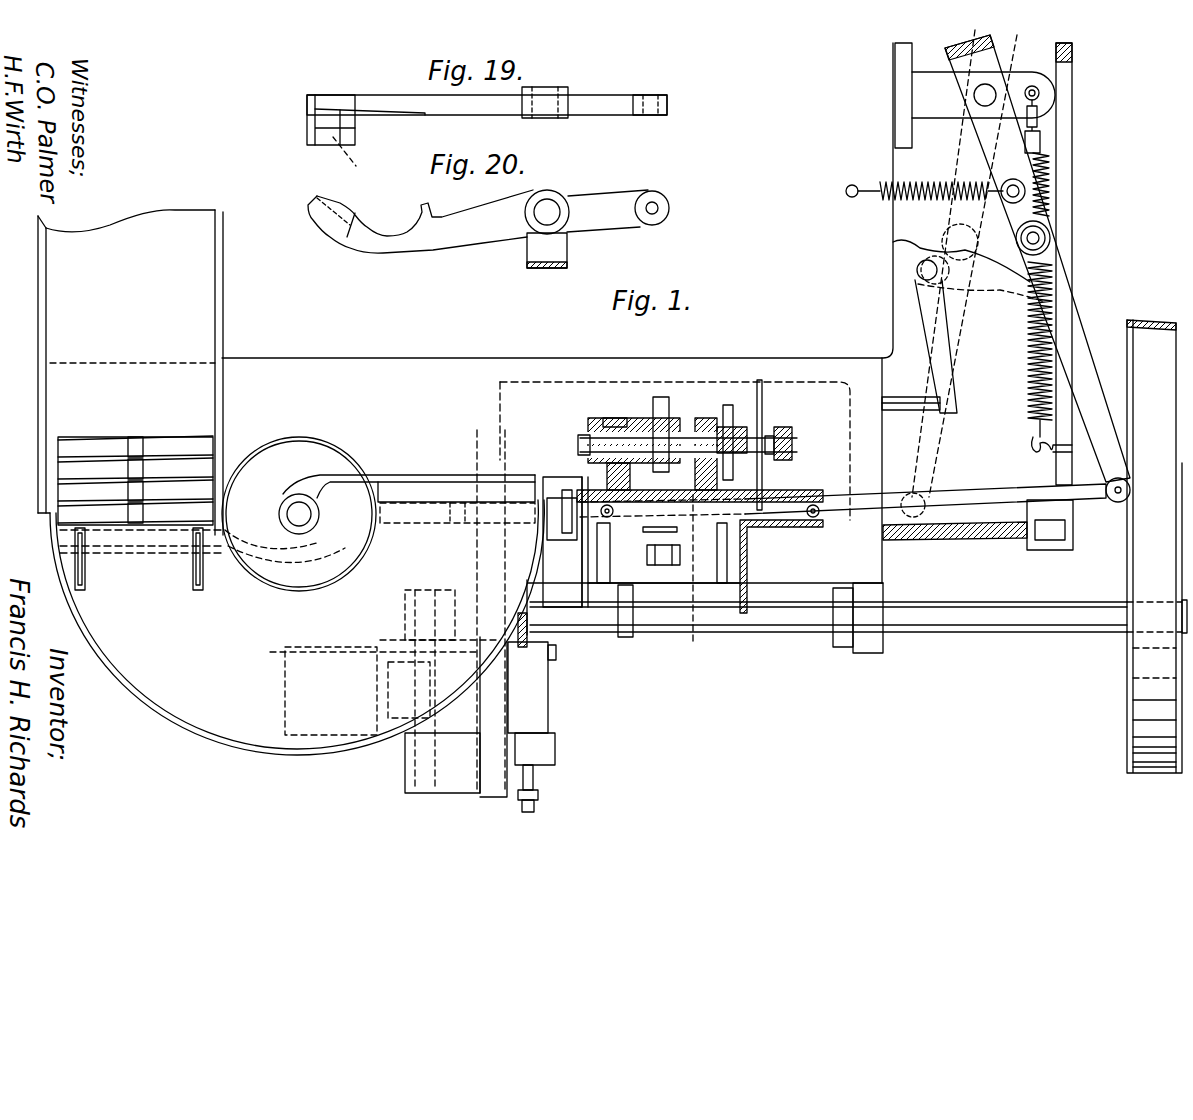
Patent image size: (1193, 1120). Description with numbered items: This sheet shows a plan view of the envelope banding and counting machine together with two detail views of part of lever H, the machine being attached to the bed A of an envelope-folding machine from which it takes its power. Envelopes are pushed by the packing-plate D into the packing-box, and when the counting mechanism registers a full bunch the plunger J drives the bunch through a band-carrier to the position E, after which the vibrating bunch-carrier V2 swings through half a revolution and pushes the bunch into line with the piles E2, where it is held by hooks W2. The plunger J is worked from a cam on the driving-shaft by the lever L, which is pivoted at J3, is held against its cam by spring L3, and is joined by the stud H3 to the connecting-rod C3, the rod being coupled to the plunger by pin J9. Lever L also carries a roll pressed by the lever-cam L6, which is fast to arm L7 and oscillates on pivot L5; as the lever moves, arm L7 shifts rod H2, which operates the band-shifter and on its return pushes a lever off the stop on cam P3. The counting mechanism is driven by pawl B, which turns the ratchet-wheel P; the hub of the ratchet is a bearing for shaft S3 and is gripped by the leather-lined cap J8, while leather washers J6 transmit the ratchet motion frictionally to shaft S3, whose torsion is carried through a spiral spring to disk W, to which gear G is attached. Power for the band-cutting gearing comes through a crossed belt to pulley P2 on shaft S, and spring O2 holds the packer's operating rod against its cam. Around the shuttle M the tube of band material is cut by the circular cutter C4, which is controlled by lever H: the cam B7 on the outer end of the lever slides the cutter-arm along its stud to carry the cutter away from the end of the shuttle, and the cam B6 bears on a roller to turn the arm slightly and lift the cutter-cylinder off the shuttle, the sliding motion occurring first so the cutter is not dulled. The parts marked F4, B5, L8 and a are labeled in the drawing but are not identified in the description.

In FIG. 1, the bed A is at (481, 313).
In FIG. 1, the hopper F4 is at (291, 482).
In FIG. 1, the piles of bunches E2 is at (90, 447).
In FIG. 1, the hooks W2 is at (87, 575).
In FIG. 1, the bunch position E is at (430, 513).
In FIG. 1, the bunch-carrier V2 is at (400, 476).
In FIG. 1, the block B5 is at (463, 500).
In FIG. 1, the plunger J is at (552, 477).
In FIG. 1, the pin J9 is at (820, 517).
In FIG. 1, the pin a is at (681, 513).
In FIG. 1, the pawl B is at (655, 410).
In FIG. 1, the ratchet-wheel P is at (650, 412).
In FIG. 1, the cap J8 is at (612, 421).
In FIG. 1, the leather washers J6 is at (597, 420).
In FIG. 1, the gear G is at (760, 405).
In FIG. 1, the disk W is at (790, 400).
In FIG. 1, the shaft S3 is at (796, 442).
In FIG. 1, the shaft S is at (1018, 620).
In FIG. 1, the cam P3 is at (628, 640).
In FIG. 1, the packing-plate D is at (691, 584).
In FIG. 1, the shuttle M is at (412, 701).
In FIG. 1, the circular cutter C4 is at (557, 655).
In FIG. 1, the connecting-rod C3 is at (1018, 522).
In FIG. 1, the stud H3 is at (1113, 503).
In FIG. 1, the rod H2 is at (918, 492).
In FIG. 1, the pulley P2 is at (1127, 700).
In FIG. 1, the lever L is at (1066, 303).
In FIG. 1, the pivot J3 is at (1042, 108).
In FIG. 1, the spring L3 is at (895, 188).
In FIG. 1, the pivot L5 is at (1052, 237).
In FIG. 1, the dog L8 is at (915, 270).
In FIG. 1, the lever-cam L6 is at (980, 284).
In FIG. 1, the arm L7 is at (950, 350).
In FIG. 1, the spring O2 is at (1030, 405).
In FIG. 19, the lever H is at (487, 102).
In FIG. 20, the lever H is at (617, 203).
In FIG. 19, the cam B7 is at (335, 112).
In FIG. 19, the cam B6 is at (344, 151).
In FIG. 20, the cam B6 is at (330, 200).